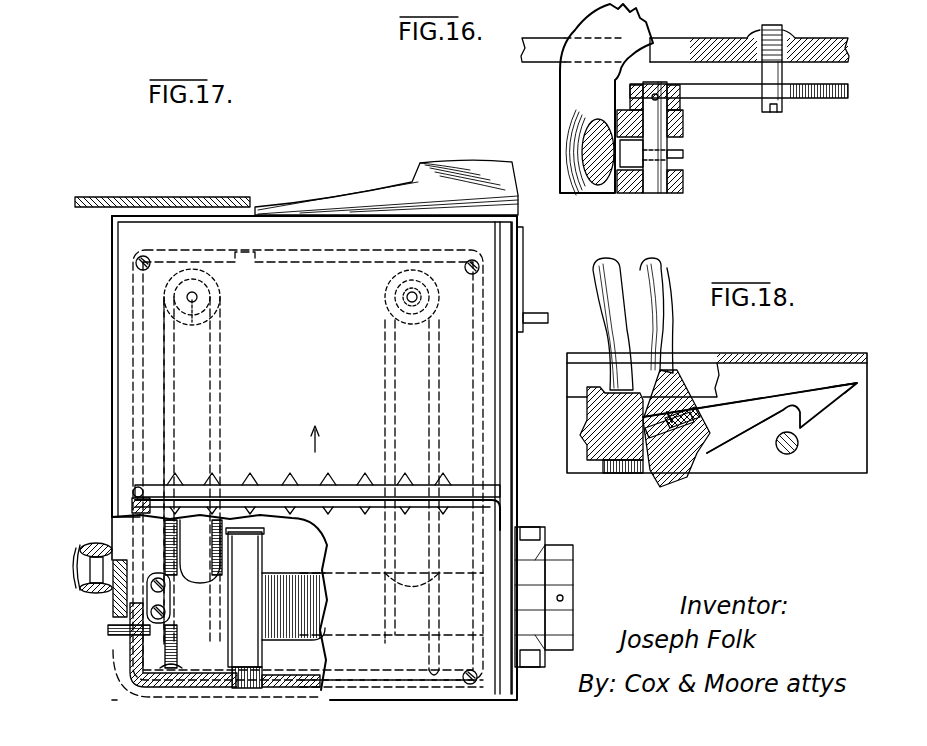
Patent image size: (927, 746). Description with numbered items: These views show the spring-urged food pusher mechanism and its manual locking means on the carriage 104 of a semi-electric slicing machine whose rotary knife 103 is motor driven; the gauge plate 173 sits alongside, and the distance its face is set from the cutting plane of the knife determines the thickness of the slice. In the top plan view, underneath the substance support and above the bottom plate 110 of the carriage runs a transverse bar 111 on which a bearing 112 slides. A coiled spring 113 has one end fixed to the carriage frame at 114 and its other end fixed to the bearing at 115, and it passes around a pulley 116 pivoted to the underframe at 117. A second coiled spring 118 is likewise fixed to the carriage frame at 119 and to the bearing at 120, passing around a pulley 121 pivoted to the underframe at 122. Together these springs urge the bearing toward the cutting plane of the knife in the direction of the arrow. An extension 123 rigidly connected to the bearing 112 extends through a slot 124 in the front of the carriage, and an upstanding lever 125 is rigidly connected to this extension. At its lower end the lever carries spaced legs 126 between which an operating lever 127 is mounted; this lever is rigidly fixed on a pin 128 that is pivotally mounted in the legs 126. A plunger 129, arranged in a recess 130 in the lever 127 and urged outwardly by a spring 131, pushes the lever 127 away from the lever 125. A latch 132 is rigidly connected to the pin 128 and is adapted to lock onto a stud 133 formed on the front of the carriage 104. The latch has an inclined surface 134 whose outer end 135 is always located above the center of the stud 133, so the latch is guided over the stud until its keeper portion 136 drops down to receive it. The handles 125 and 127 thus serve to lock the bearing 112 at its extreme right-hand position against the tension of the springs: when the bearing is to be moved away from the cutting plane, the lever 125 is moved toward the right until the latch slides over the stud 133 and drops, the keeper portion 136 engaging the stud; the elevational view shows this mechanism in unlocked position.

In FIG. 17, the rotary knife 103 is at (300, 200).
In FIG. 17, the carriage 104 is at (511, 400).
In FIG. 16, the carriage 104 is at (840, 40).
In FIG. 18, the carriage 104 is at (852, 355).
In FIG. 17, the bottom plate 110 is at (482, 287).
In FIG. 17, the transverse bar 111 is at (252, 347).
In FIG. 17, the bearing 112 is at (277, 575).
In FIG. 17, the coiled spring 113 is at (172, 418).
In FIG. 17, the spring fixing point 114 is at (178, 645).
In FIG. 17, the spring fixing point 115 is at (218, 640).
In FIG. 17, the pulley 116 is at (193, 290).
In FIG. 17, the pulley pivot 117 is at (192, 322).
In FIG. 17, the second coiled spring 118 is at (388, 395).
In FIG. 17, the spring fixing point 119 is at (432, 670).
In FIG. 17, the spring fixing point 120 is at (386, 645).
In FIG. 17, the pulley 121 is at (412, 290).
In FIG. 17, the pulley pivot 122 is at (402, 297).
In FIG. 17, the extension 123 is at (104, 539).
In FIG. 16, the extension 123 is at (568, 80).
In FIG. 17, the slot 124 is at (103, 516).
In FIG. 16, the slot 124 is at (675, 37).
In FIG. 17, the upstanding lever 125 is at (106, 593).
In FIG. 16, the upstanding lever 125 is at (560, 133).
In FIG. 18, the upstanding lever 125 is at (613, 260).
In FIG. 16, the spaced legs 126 is at (683, 125).
In FIG. 17, the operating lever 127 is at (120, 615).
In FIG. 16, the operating lever 127 is at (683, 160).
In FIG. 18, the operating lever 127 is at (656, 262).
In FIG. 16, the pin 128 is at (655, 193).
In FIG. 18, the pin 128 is at (683, 455).
In FIG. 18, the plunger 129 is at (595, 440).
In FIG. 18, the recess 130 is at (665, 415).
In FIG. 18, the spring 131 is at (690, 419).
In FIG. 17, the latch 132 is at (130, 660).
In FIG. 16, the latch 132 is at (743, 92).
In FIG. 18, the latch 132 is at (800, 390).
In FIG. 17, the stud 133 is at (118, 636).
In FIG. 16, the stud 133 is at (783, 108).
In FIG. 18, the stud 133 is at (786, 455).
In FIG. 18, the inclined surface 134 is at (822, 417).
In FIG. 18, the outer end 135 is at (856, 385).
In FIG. 18, the keeper portion 136 is at (783, 413).
In FIG. 17, the gauge plate 173 is at (212, 196).